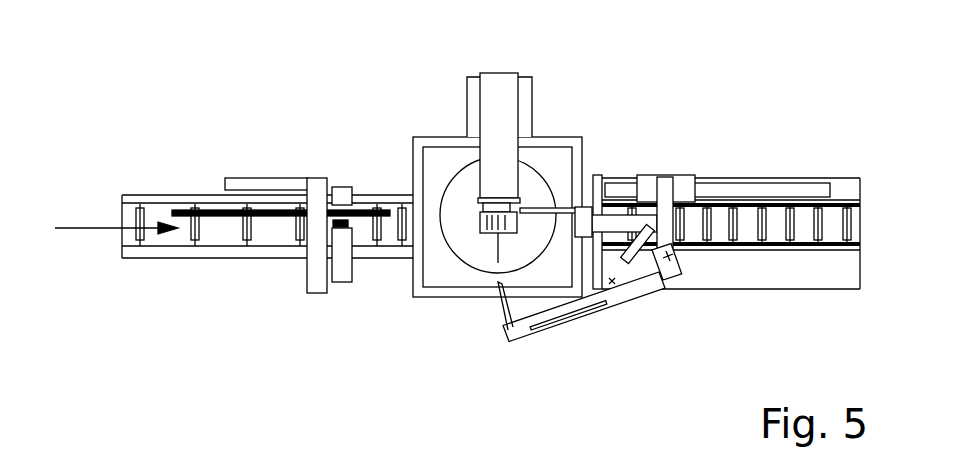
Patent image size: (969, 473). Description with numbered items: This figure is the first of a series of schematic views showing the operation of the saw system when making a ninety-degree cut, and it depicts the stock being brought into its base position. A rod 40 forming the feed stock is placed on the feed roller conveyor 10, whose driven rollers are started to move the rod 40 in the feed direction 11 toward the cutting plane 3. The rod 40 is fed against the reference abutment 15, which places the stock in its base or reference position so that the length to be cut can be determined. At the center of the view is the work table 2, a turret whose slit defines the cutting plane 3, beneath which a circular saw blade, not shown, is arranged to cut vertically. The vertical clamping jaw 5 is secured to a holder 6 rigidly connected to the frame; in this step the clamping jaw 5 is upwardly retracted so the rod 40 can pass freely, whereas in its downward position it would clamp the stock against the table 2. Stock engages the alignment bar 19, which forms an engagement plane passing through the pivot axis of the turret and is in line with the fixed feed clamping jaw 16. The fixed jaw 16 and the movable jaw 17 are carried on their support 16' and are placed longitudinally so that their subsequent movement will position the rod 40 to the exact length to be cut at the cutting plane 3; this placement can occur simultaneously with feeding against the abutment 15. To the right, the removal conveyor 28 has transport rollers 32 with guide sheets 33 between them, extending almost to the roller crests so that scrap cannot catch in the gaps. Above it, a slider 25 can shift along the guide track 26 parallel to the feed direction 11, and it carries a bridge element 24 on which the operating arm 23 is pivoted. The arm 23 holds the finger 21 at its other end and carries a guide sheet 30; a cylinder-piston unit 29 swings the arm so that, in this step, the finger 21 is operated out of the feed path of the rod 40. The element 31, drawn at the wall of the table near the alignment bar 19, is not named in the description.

The work table 2 is at (458, 235).
The cutting plane 3 is at (495, 258).
The vertical clamping jaw 5 is at (461, 212).
The holder 6 is at (508, 105).
The feed roller conveyor 10 is at (145, 197).
The feed direction 11 is at (88, 227).
The reference abutment 15 is at (392, 200).
The fixed feed clamping jaw 16 is at (349, 129).
The support of the feed jaws 16' is at (308, 273).
The movable feed clamping jaw 17 is at (342, 282).
The alignment bar 19 is at (555, 207).
The finger 21 is at (500, 285).
The operating arm 23 is at (622, 293).
The bridge element 24 is at (666, 177).
The slider 25 is at (697, 176).
The guide track 26 is at (742, 190).
The removal conveyor 28 is at (783, 251).
The cylinder-piston unit 29 is at (655, 282).
The guide sheet 30 is at (557, 330).
The connector block 31 is at (578, 206).
The transport rollers 32 is at (802, 218).
The guide sheets 33 is at (817, 200).
The rod 40 is at (212, 208).